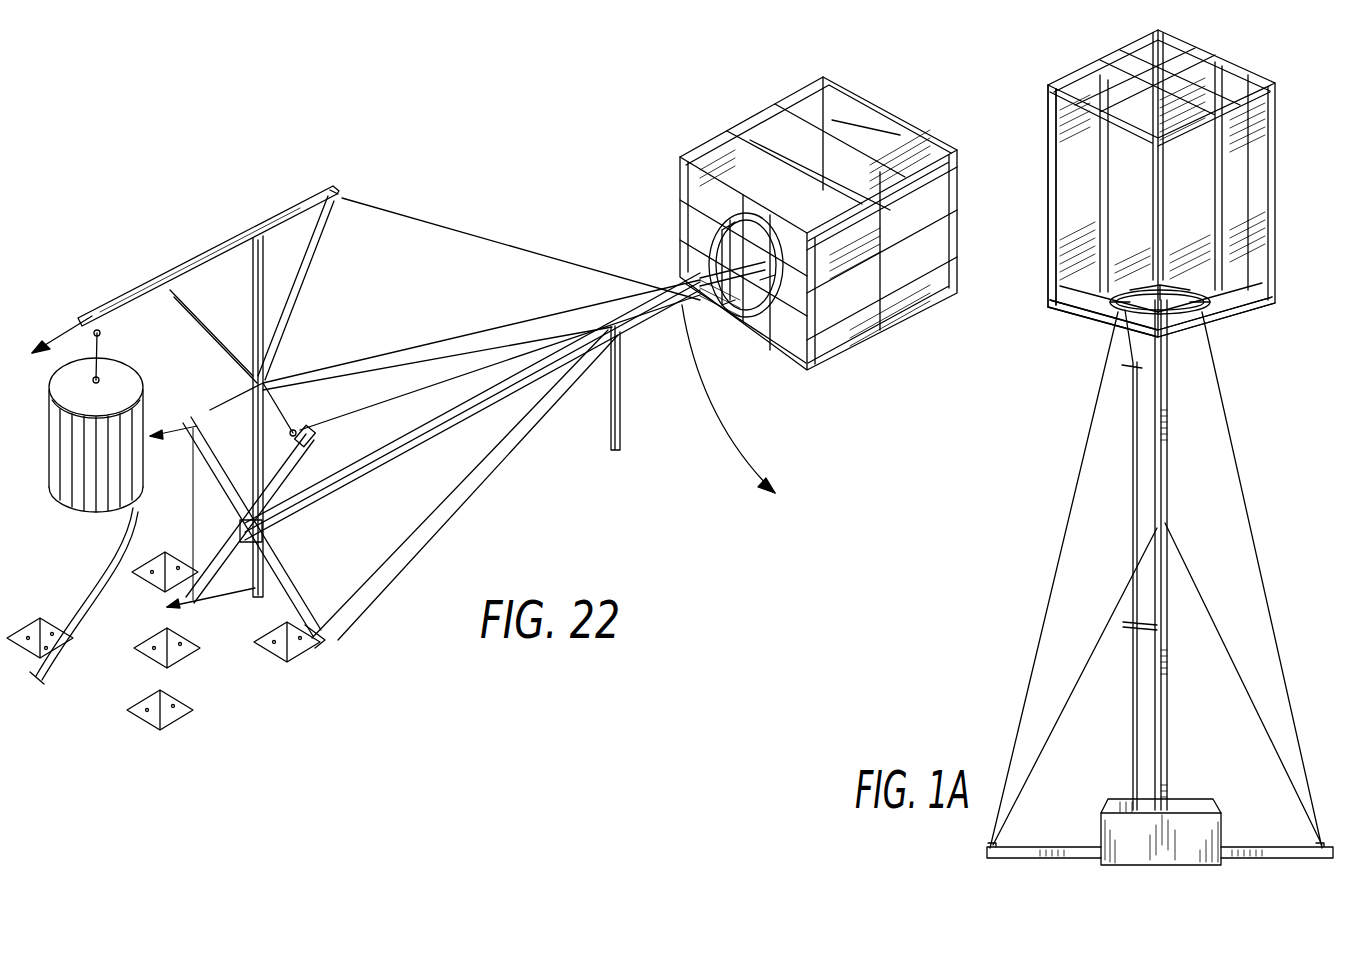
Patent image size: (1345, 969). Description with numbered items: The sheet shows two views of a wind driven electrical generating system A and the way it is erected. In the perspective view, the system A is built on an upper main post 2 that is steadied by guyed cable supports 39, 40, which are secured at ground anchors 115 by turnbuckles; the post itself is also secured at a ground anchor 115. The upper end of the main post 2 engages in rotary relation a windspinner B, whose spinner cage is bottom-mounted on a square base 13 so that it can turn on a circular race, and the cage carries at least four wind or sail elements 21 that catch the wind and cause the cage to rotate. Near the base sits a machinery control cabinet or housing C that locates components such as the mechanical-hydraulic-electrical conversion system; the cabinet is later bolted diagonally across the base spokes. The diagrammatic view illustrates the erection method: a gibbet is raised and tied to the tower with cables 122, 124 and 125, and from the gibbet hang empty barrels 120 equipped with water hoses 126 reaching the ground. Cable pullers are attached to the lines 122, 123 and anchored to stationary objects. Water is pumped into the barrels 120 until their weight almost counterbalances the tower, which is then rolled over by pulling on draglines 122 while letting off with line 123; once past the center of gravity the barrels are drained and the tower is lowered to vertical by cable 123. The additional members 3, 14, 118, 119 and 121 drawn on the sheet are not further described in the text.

In FIG. 1A, the upper main post 2 is at (1165, 527).
In FIG. 1A, the base rails 3 is at (1055, 845).
In FIG. 1A, the square base 13 is at (1238, 318).
In FIG. 1A, the frame bottom 14 is at (1278, 300).
In FIG. 1A, the sail elements 21 is at (1063, 137).
In FIG. 1A, the guyed cable support 39 is at (1258, 553).
In FIG. 1A, the guyed cable support 40 is at (1225, 645).
In FIG. 1A, the wind driven electrical generating system A is at (1070, 490).
In FIG. 1A, the windspinner B is at (1286, 208).
In FIG. 1A, the machinery control cabinet C is at (1192, 788).
In FIG. 22, the ground anchor 115 is at (50, 632).
In FIG. 22, the support leg 118 is at (625, 432).
In FIG. 22, the diagonal brace 119 is at (290, 336).
In FIG. 22, the empty barrel 120 is at (143, 417).
In FIG. 22, the hose end 121 is at (54, 620).
In FIG. 22, the cable 122 is at (540, 255).
In FIG. 22, the line 123 is at (755, 457).
In FIG. 22, the cable 124 is at (292, 420).
In FIG. 22, the cable 125 is at (240, 592).
In FIG. 22, the water hose 126 is at (123, 553).